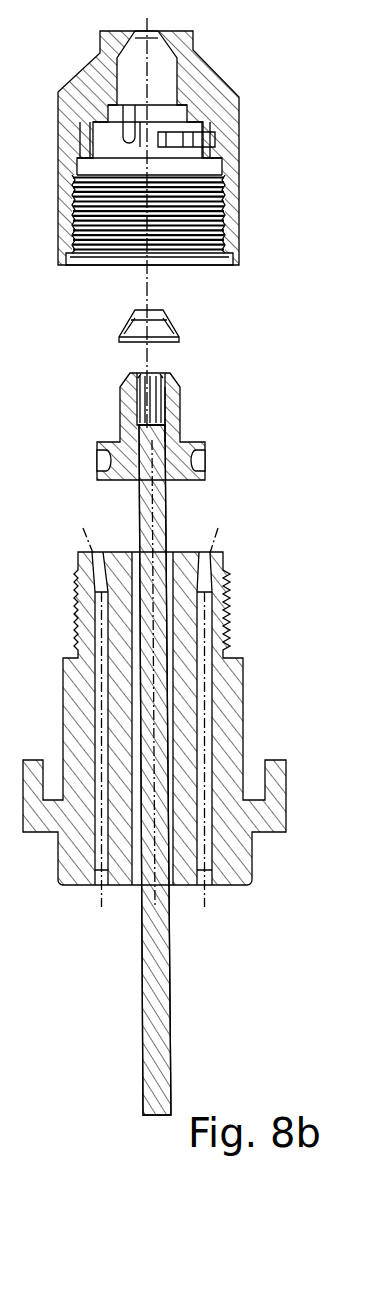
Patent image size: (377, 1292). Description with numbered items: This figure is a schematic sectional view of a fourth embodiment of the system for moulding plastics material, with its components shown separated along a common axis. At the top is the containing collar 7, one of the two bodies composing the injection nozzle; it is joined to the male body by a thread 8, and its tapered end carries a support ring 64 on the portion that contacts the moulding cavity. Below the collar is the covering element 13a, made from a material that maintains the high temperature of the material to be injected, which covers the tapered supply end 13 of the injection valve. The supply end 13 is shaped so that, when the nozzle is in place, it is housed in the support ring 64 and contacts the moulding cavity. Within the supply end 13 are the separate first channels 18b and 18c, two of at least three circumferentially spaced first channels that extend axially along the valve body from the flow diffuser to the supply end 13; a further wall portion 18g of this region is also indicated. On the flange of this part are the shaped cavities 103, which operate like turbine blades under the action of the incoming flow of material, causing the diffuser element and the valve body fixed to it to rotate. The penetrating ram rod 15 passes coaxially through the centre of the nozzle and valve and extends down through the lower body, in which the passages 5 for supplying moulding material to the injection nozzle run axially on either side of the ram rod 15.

The support ring 64 is at (194, 40).
The containing collar 7 is at (239, 152).
The thread 8 is at (223, 222).
The covering element 13a is at (192, 310).
The supply end 13 is at (153, 425).
The first channel 18c is at (150, 403).
The first channel 18b is at (138, 408).
The collet wall 18g is at (170, 413).
The shaped cavities 103 is at (204, 460).
The ram rod 15 is at (166, 513).
The passage 5 is at (103, 880).